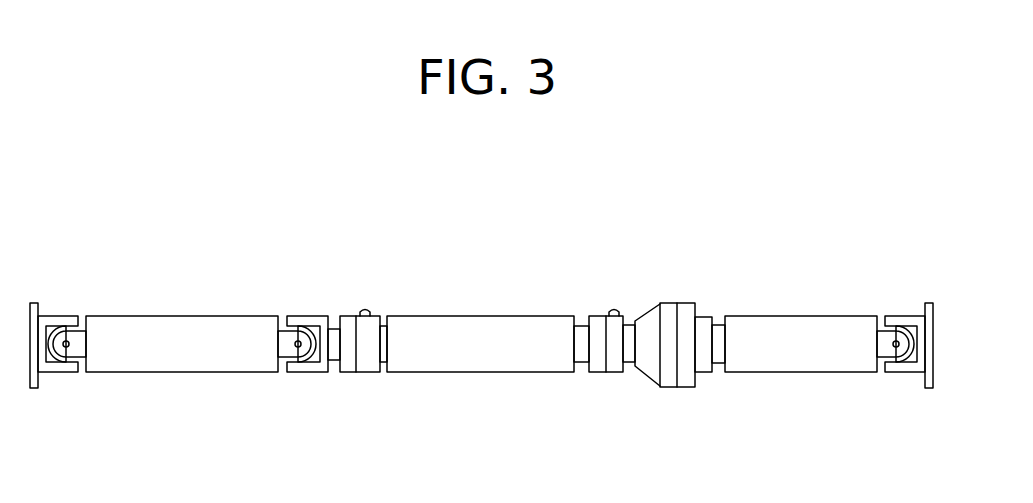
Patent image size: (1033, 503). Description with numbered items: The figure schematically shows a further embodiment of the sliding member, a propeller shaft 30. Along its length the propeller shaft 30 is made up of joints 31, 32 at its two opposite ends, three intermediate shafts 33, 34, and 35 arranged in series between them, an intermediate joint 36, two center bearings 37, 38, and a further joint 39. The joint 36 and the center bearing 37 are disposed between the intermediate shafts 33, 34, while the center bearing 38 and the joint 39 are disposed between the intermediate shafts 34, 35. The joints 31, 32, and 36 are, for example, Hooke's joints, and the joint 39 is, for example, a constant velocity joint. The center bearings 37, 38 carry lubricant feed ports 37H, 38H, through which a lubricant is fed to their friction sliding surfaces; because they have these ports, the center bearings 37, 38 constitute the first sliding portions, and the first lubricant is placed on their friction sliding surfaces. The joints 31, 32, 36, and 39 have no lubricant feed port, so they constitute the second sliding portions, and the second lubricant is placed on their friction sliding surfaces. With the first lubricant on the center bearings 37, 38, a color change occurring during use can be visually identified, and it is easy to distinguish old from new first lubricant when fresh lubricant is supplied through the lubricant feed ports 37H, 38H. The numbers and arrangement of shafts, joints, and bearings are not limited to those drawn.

The propeller shaft 30 is at (447, 205).
The joint 31 is at (55, 315).
The joint 32 is at (905, 316).
The intermediate shaft 33 is at (181, 373).
The intermediate shaft 34 is at (486, 373).
The intermediate shaft 35 is at (797, 373).
The joint 36 is at (310, 315).
The center bearing 37 is at (355, 373).
The lubricant feed port 37H is at (367, 310).
The center bearing 38 is at (603, 373).
The lubricant feed port 38H is at (615, 310).
The joint 39 is at (676, 387).